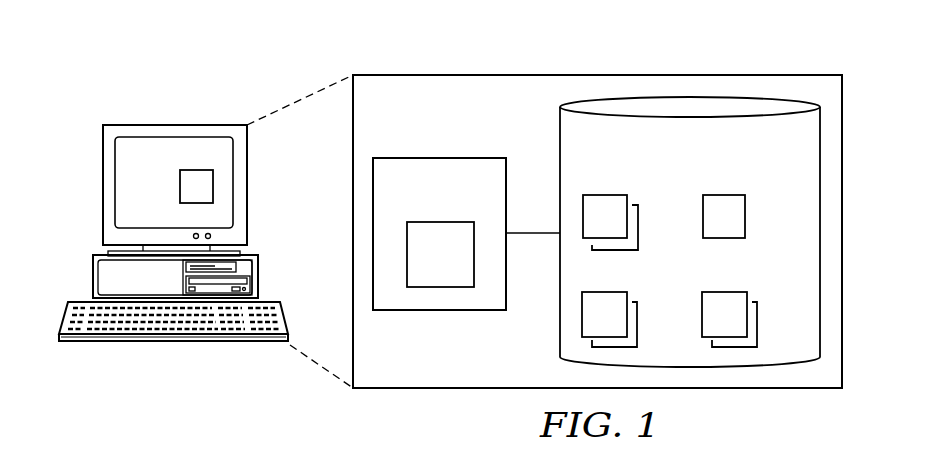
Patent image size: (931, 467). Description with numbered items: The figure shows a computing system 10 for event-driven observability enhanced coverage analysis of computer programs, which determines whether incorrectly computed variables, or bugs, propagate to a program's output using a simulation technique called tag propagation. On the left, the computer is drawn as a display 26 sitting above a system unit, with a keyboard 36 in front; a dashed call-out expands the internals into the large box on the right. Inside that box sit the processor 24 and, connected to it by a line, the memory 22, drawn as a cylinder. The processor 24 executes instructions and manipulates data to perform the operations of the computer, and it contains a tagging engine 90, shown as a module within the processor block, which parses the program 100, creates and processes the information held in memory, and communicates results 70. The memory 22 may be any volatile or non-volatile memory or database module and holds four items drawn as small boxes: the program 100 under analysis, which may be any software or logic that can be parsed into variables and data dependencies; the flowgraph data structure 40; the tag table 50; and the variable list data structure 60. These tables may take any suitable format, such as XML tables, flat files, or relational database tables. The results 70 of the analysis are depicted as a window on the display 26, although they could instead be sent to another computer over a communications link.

The computing system 10 is at (254, 58).
The display 26 is at (176, 125).
The results 70 is at (176, 187).
The keyboard 36 is at (176, 342).
The processor 24 is at (440, 158).
The tagging engine 90 is at (453, 266).
The memory 22 is at (560, 325).
The flowgraph data structure 40 is at (641, 181).
The program 100 is at (736, 181).
The variable list data structure 60 is at (644, 287).
The tag table 50 is at (762, 287).